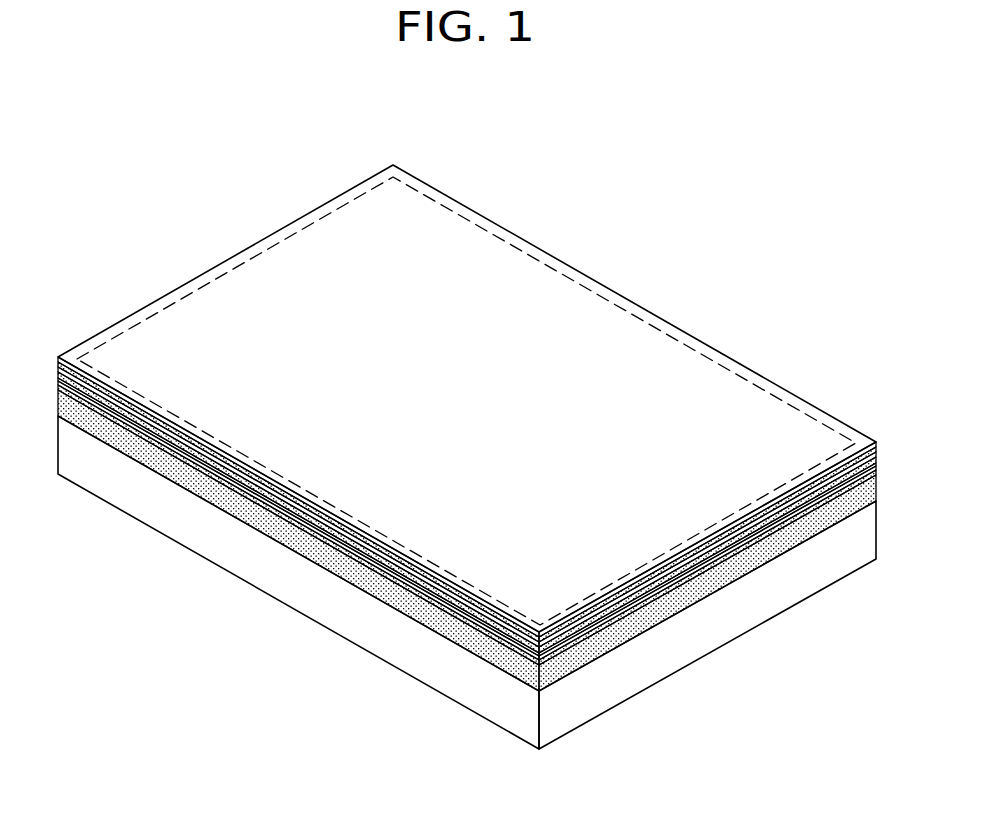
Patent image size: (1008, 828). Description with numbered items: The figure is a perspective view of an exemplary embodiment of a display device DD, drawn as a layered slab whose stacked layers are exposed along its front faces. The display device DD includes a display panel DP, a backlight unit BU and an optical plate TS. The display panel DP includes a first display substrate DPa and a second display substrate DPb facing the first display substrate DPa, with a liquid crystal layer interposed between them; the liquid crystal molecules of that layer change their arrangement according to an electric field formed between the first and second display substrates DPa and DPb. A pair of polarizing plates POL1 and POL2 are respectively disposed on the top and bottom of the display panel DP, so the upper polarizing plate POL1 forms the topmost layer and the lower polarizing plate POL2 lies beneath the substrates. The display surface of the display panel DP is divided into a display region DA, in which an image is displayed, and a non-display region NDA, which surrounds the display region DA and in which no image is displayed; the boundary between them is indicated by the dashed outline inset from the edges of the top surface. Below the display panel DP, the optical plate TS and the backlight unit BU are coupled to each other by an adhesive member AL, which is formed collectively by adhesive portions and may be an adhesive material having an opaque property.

The display device DD is at (708, 221).
The non-display region NDA is at (492, 228).
The display region DA is at (533, 293).
The polarizing plate POL1 is at (195, 437).
The display panel DP is at (159, 618).
The second display substrate DPb is at (228, 461).
The first display substrate DPa is at (270, 491).
The polarizing plate POL2 is at (325, 528).
The adhesive member AL is at (365, 558).
The optical plate TS is at (425, 613).
The backlight unit BU is at (432, 665).